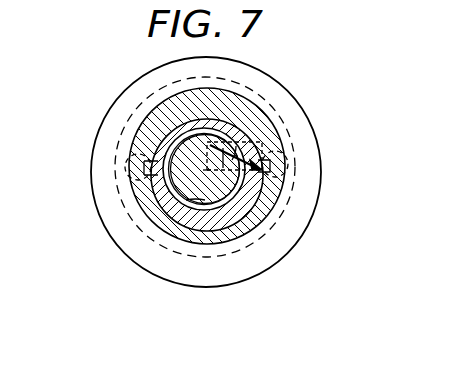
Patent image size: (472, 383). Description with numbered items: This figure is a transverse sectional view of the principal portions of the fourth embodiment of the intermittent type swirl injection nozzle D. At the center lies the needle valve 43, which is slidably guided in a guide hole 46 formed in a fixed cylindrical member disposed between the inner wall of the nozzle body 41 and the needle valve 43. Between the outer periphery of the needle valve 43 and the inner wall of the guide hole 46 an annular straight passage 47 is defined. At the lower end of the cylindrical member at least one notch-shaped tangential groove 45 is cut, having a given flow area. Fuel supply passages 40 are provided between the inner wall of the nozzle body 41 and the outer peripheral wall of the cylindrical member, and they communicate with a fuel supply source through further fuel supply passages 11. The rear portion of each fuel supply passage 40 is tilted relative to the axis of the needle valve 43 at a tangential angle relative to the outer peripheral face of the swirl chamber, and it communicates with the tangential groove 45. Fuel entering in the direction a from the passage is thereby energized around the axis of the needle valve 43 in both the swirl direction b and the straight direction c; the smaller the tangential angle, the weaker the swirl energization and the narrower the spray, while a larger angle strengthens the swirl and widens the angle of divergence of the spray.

The intermittent type swirl injection nozzle D is at (113, 92).
The fuel supply passage 40 is at (122, 165).
The nozzle body 41 is at (283, 101).
The needle valve 43 is at (204, 200).
The tangential groove 45 is at (213, 115).
The guide hole 46 is at (197, 207).
The annular straight passage 47 is at (193, 203).
The fuel supply passage 11 is at (122, 202).
The direction of fuel flow from the tangential port a is at (224, 148).
The swirl direction b is at (268, 160).
The straight direction c is at (207, 184).